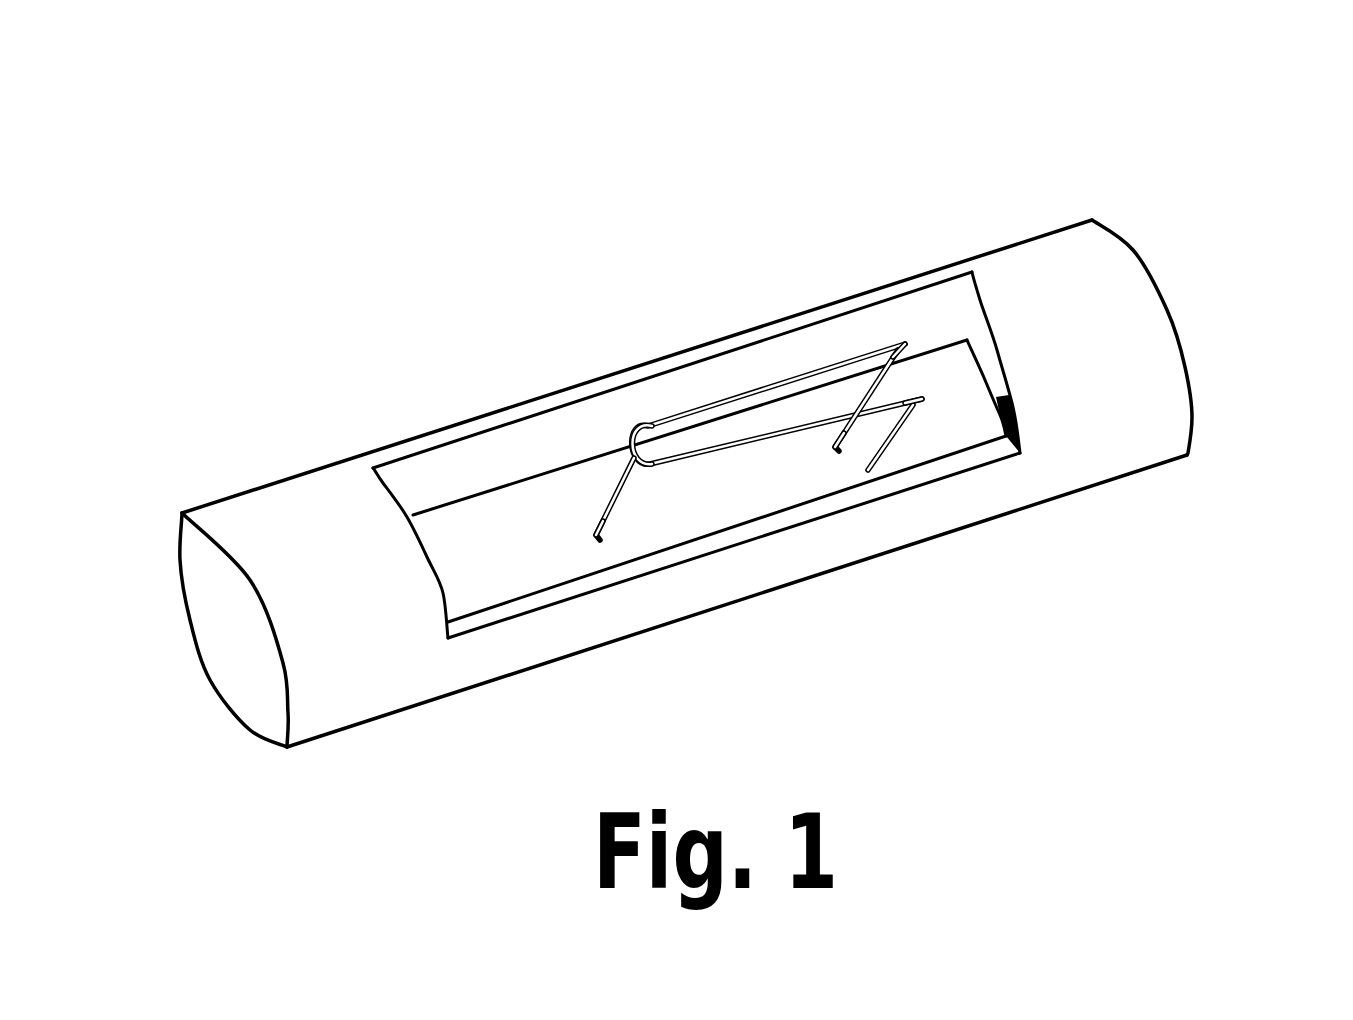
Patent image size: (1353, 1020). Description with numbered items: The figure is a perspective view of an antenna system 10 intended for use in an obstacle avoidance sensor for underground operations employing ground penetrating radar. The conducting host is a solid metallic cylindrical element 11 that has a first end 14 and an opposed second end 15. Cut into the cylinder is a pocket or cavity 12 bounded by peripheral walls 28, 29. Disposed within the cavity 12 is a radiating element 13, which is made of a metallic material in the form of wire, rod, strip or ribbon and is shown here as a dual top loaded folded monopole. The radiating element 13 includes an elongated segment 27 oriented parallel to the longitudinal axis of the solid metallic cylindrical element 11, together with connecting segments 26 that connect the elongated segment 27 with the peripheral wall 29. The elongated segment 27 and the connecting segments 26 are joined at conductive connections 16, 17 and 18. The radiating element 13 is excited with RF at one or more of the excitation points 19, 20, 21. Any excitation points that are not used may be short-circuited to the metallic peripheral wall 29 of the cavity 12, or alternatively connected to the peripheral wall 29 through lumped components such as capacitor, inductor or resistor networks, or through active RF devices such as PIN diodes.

The antenna system 10 is at (695, 376).
The solid metallic cylindrical element 11 is at (262, 487).
The cavity 12 is at (963, 435).
The radiating element 13 is at (720, 443).
The first end 14 is at (177, 543).
The second end 15 is at (1182, 342).
The conductive connection 16 is at (628, 457).
The conductive connection 17 is at (870, 345).
The conductive connection 18 is at (912, 410).
The excitation point 19 is at (592, 535).
The excitation point 20 is at (835, 450).
The excitation point 21 is at (870, 475).
The connecting segment 26 is at (600, 497).
The elongated segment 27 is at (757, 458).
The peripheral wall 28 is at (460, 467).
The peripheral wall 29 is at (955, 370).